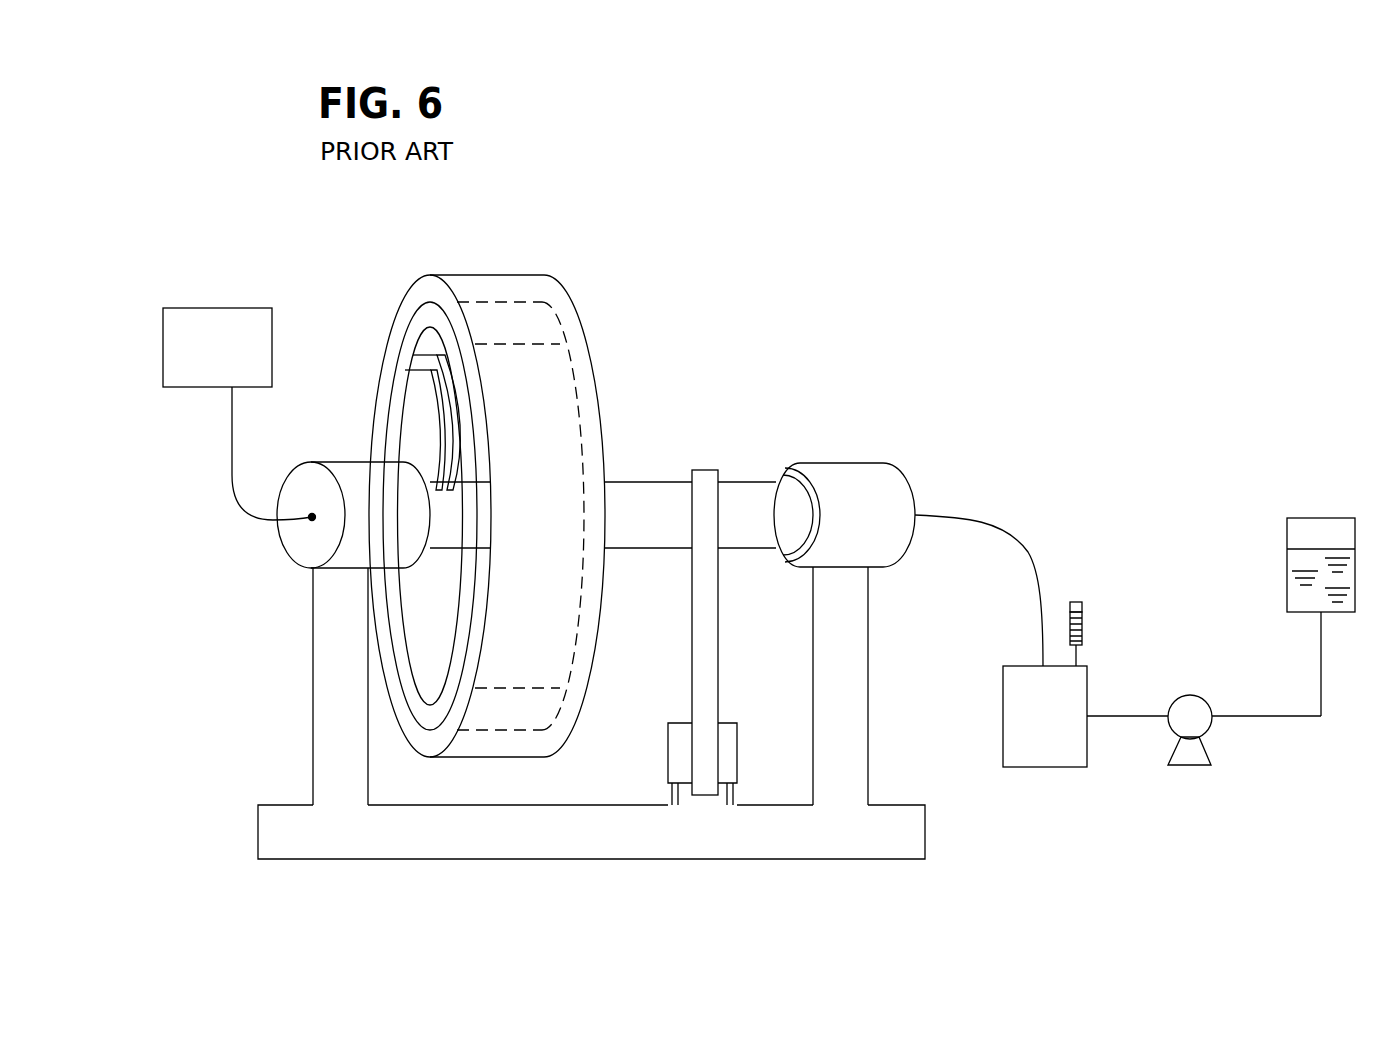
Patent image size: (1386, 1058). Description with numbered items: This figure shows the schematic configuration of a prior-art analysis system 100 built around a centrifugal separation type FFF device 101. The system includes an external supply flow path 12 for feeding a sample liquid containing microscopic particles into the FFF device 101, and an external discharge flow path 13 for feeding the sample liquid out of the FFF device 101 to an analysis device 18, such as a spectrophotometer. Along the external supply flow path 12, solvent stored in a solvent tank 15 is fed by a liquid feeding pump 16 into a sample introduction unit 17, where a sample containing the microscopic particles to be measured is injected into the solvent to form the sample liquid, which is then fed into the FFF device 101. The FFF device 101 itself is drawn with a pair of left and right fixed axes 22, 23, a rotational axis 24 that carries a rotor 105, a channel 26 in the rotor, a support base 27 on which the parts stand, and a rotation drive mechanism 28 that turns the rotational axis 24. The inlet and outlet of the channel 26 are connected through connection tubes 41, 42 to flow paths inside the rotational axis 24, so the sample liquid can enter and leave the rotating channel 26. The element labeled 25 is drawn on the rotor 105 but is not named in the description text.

The analysis system 100 is at (882, 318).
The centrifugal separation type FFF device 101 is at (567, 220).
The rotor 105 is at (553, 407).
The external supply flow path 12 is at (1036, 562).
The external discharge flow path 13 is at (232, 487).
The solvent tank 15 is at (1287, 571).
The liquid feeding pump 16 is at (1207, 725).
The sample introduction unit 17 is at (1044, 757).
The analysis device 18 is at (190, 365).
The fixed axis 22 is at (858, 462).
The fixed axis 23 is at (347, 472).
The rotational axis 24 is at (627, 532).
The drum peripheral wall 25 is at (563, 668).
The channel 26 is at (427, 712).
The support base 27 is at (850, 685).
The rotation drive mechanism 28 is at (707, 647).
The connection tube 41 is at (437, 437).
The connection tube 42 is at (435, 390).